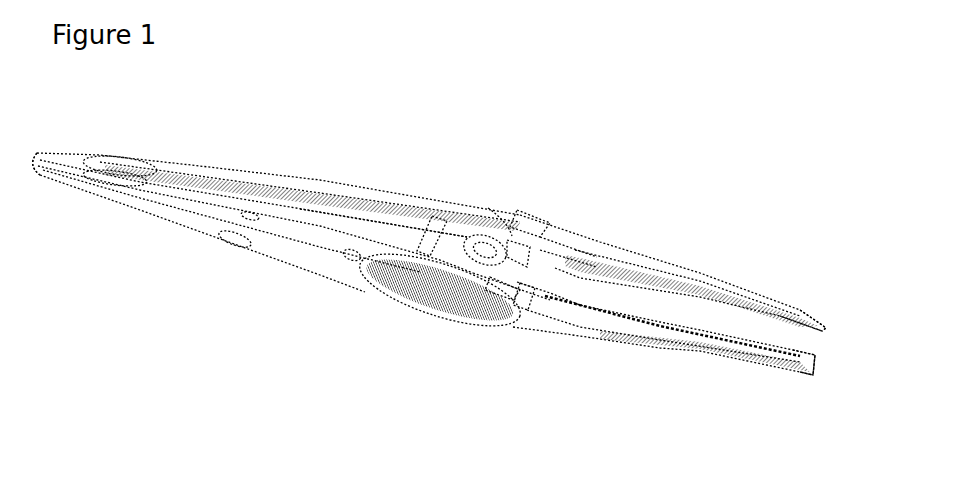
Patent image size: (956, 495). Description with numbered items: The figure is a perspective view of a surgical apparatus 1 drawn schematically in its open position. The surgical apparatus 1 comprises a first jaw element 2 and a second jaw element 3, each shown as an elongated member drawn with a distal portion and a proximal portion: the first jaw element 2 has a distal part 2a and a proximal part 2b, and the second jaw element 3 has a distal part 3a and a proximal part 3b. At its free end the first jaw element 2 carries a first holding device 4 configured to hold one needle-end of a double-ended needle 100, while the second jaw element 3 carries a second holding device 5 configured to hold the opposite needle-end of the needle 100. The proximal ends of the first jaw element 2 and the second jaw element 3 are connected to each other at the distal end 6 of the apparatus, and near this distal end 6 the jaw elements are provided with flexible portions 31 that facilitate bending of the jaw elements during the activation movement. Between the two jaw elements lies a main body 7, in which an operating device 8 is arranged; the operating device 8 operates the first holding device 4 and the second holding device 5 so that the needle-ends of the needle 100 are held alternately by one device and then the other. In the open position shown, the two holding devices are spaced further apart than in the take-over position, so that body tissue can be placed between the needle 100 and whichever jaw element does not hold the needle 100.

The surgical apparatus 1 is at (530, 152).
The first jaw element 2 is at (447, 309).
The distal part of first jaw element 2a is at (282, 262).
The proximal part of first jaw element 2b is at (606, 324).
The second jaw element 3 is at (548, 226).
The distal part of second jaw element 3a is at (290, 180).
The proximal part of second jaw element 3b is at (645, 258).
The first holding device 4 is at (799, 386).
The second holding device 5 is at (822, 311).
The distal end of the apparatus 6 is at (50, 202).
The main body 7 is at (362, 217).
The operating device 8 is at (418, 222).
The flexible portion 31 is at (128, 158).
The double-ended needle 100 is at (815, 356).